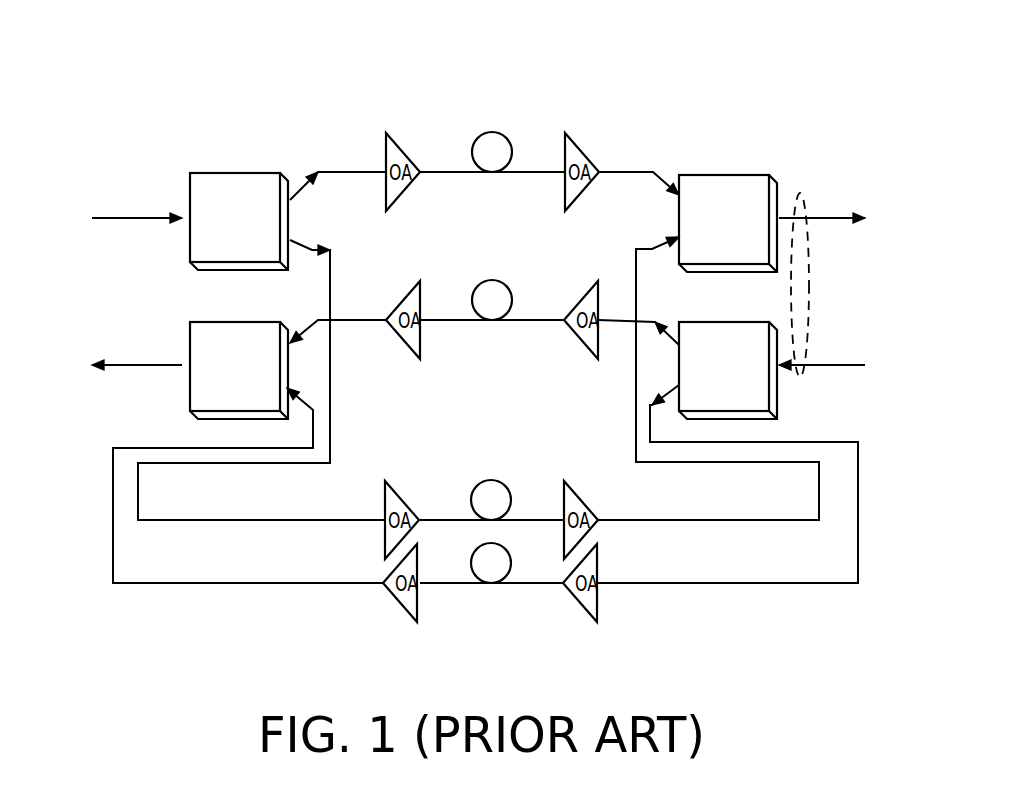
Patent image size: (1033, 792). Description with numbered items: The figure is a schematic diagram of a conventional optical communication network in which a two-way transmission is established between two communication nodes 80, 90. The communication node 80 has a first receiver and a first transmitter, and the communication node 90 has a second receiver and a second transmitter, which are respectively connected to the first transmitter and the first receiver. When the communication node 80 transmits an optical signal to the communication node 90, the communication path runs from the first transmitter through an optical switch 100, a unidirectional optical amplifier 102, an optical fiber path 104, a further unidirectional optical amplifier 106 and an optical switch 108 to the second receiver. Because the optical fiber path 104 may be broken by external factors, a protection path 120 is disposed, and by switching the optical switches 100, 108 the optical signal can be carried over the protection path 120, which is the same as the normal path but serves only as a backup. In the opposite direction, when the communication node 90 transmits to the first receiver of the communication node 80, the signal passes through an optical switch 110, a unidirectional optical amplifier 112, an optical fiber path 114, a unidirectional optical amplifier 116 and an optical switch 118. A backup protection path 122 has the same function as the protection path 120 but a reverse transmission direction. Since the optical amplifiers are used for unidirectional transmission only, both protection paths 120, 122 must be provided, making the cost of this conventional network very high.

The communication node 80 is at (200, 92).
The communication node 90 is at (775, 92).
The optical switch 100 is at (263, 182).
The unidirectional optical amplifier 102 is at (402, 155).
The optical fiber path 104 is at (492, 140).
The unidirectional optical amplifier 106 is at (580, 155).
The optical switch 108 is at (710, 182).
The optical switch 110 is at (733, 330).
The unidirectional optical amplifier 112 is at (580, 300).
The optical fiber path 114 is at (492, 290).
The unidirectional optical amplifier 116 is at (400, 300).
The optical switch 118 is at (243, 327).
The protection path 120 is at (233, 463).
The protection path 122 is at (233, 583).